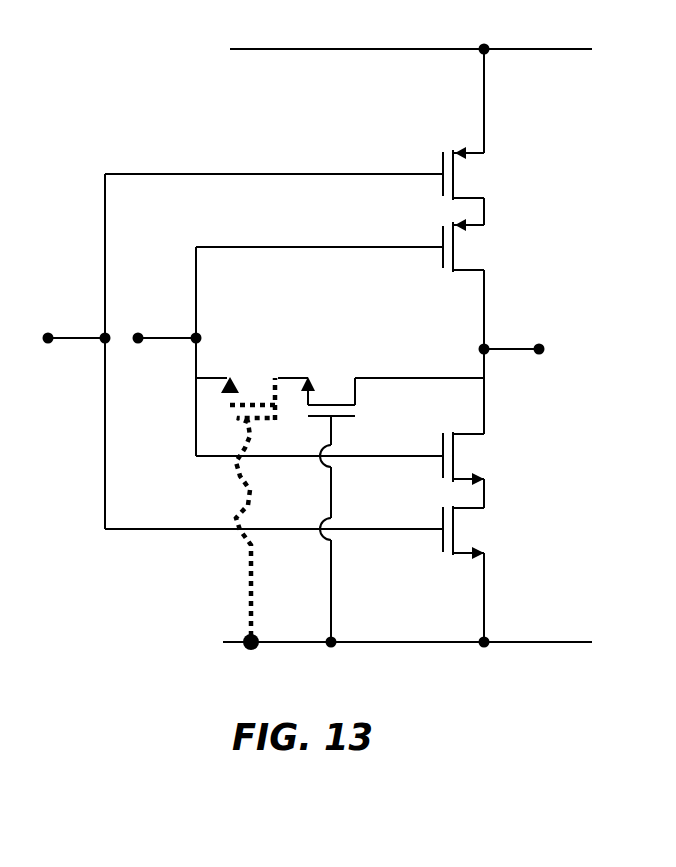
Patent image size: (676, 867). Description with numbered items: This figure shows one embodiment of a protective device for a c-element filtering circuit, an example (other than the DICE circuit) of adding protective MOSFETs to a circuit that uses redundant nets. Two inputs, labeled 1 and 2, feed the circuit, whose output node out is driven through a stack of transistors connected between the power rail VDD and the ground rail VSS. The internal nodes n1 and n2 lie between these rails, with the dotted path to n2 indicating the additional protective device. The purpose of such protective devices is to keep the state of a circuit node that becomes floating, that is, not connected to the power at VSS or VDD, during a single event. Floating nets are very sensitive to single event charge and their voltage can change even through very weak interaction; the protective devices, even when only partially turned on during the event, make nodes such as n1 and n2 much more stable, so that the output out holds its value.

The first input 1 is at (69, 318).
The second input 2 is at (165, 320).
The node n1 transistor n1 is at (328, 494).
The node n2 path n2 is at (254, 498).
The element VDD is at (411, 34).
The element VSS is at (407, 624).
The output node out is at (523, 330).